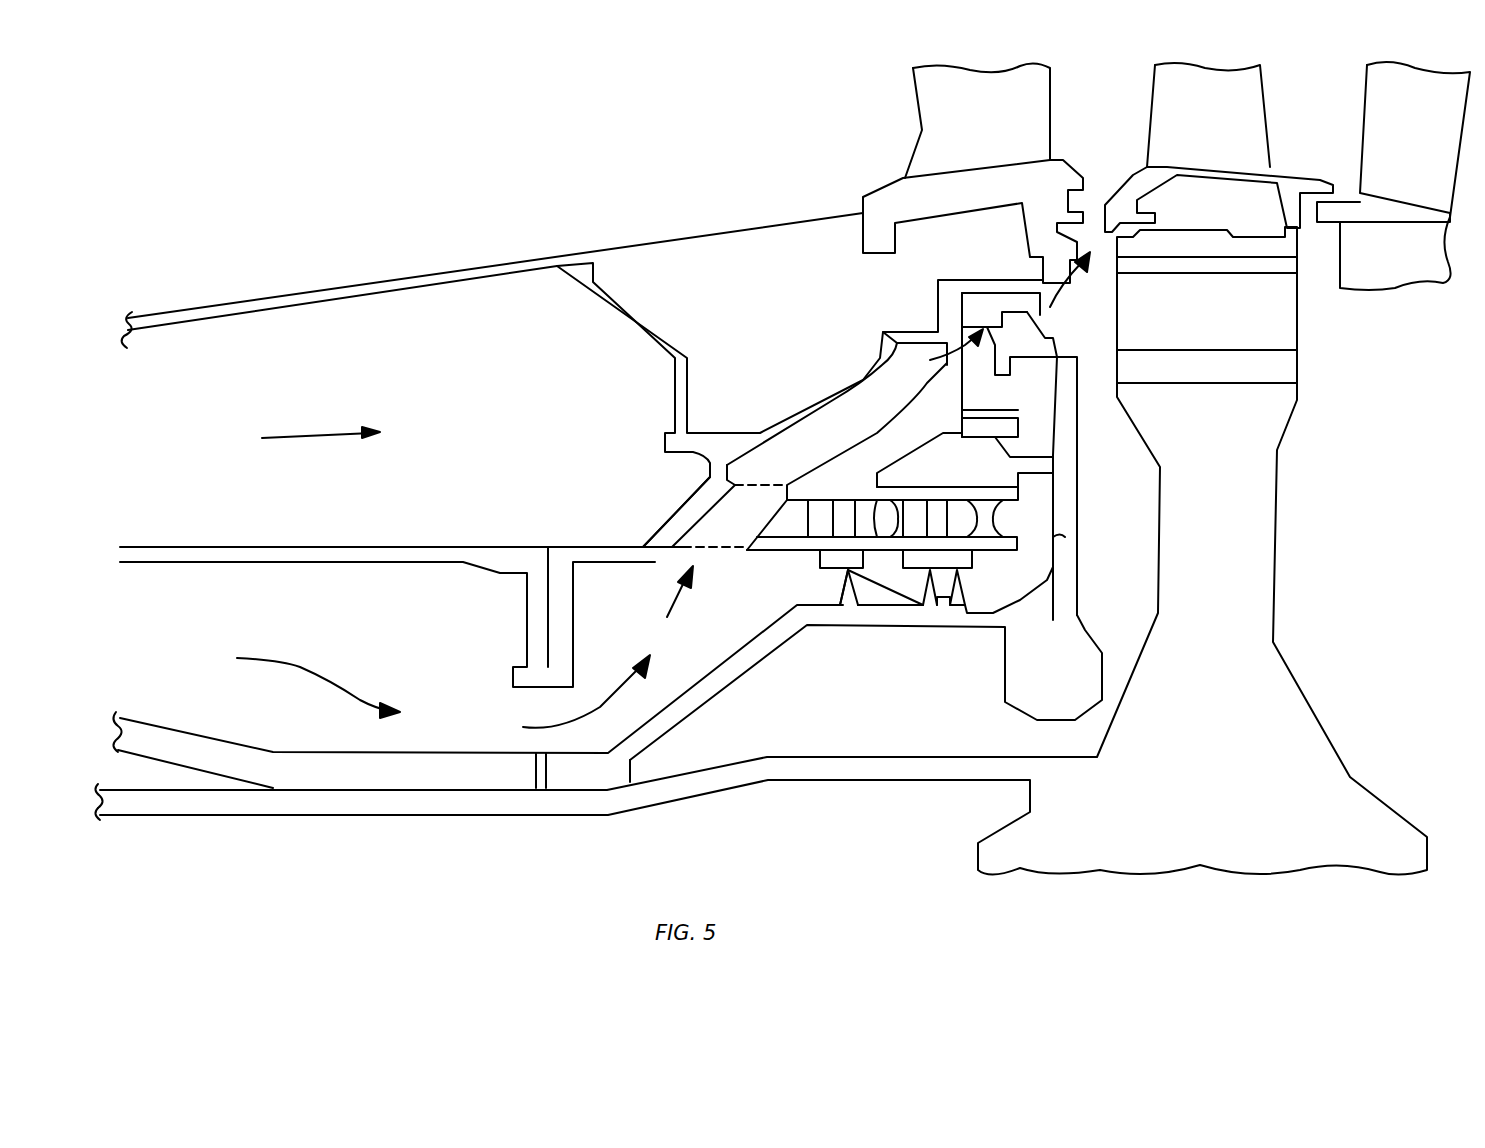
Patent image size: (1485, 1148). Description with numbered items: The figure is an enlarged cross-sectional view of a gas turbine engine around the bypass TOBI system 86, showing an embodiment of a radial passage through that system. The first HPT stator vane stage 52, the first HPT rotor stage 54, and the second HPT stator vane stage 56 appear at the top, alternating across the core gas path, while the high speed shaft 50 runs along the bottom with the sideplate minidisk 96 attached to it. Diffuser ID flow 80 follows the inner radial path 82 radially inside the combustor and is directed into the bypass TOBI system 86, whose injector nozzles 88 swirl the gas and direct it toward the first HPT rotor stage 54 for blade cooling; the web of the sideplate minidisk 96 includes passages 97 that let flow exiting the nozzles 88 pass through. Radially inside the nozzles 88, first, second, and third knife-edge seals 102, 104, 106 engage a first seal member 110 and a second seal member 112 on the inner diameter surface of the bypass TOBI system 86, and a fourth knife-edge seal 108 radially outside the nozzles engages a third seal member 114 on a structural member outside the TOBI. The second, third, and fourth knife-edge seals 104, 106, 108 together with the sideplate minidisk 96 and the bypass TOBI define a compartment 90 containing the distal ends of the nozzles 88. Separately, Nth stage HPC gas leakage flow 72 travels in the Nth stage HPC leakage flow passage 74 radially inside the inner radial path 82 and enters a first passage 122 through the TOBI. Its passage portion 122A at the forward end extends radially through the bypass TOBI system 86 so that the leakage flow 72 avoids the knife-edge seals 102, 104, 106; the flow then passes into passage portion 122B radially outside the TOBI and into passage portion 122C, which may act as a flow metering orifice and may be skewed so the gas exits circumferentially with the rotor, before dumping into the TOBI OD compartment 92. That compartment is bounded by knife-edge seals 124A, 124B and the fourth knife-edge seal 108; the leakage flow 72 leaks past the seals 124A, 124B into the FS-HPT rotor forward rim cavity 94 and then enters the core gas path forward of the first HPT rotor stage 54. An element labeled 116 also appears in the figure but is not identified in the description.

The high speed shaft 50 is at (477, 816).
The first HPT stator vane stage 52 is at (1002, 111).
The first HPT rotor stage 54 is at (1218, 136).
The second HPT stator vane stage 56 is at (1426, 127).
The Nth stage HPC gas leakage flow 72 is at (300, 667).
The Nth stage HPC leakage flow passage 74 is at (218, 625).
The diffuser ID flow 80 is at (293, 436).
The inner radial path 82 is at (202, 391).
The bypass TOBI system 86 is at (848, 358).
The injector nozzles 88 is at (1018, 493).
The compartment 90 is at (976, 470).
The TOBI OD compartment 92 is at (1048, 391).
The FS-HPT rotor forward rim cavity 94 is at (1097, 255).
The sideplate minidisk 96 is at (1071, 678).
The passages 97 is at (1058, 537).
The first knife-edge seal 102 is at (848, 597).
The second knife-edge seal 104 is at (932, 600).
The third knife-edge seal 106 is at (958, 600).
The fourth knife-edge seal 108 is at (1025, 440).
The first seal member 110 is at (820, 563).
The second seal member 112 is at (972, 558).
The third seal member 114 is at (1020, 427).
The web 116 is at (905, 587).
The first passage 122 is at (670, 598).
The passage portion 122A is at (733, 518).
The passage portion 122B is at (807, 457).
The passage portion 122C is at (928, 352).
The knife-edge seal 124A is at (1030, 313).
The knife-edge seal 124B is at (1043, 337).